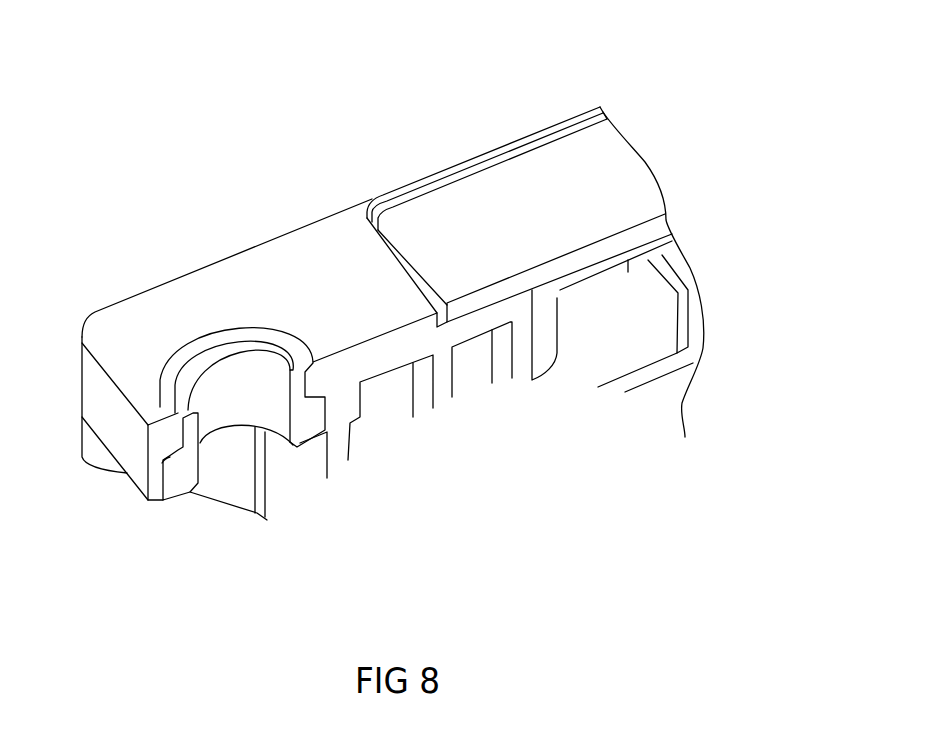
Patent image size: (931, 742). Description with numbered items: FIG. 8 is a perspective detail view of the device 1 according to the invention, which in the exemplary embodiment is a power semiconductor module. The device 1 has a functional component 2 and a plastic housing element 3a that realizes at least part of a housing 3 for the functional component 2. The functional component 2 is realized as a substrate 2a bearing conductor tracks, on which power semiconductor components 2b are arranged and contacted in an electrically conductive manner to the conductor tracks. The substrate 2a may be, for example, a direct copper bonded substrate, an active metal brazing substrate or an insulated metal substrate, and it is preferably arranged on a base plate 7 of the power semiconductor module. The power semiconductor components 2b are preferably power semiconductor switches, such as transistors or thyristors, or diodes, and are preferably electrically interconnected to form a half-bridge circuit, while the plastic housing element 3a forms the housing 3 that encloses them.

The device 1 is at (105, 147).
The functional component 2 is at (747, 165).
The substrate 2a is at (610, 253).
The power semiconductor components 2b is at (600, 282).
The housing 3 is at (170, 308).
The plastic housing element 3a is at (259, 312).
The base plate 7 is at (590, 160).